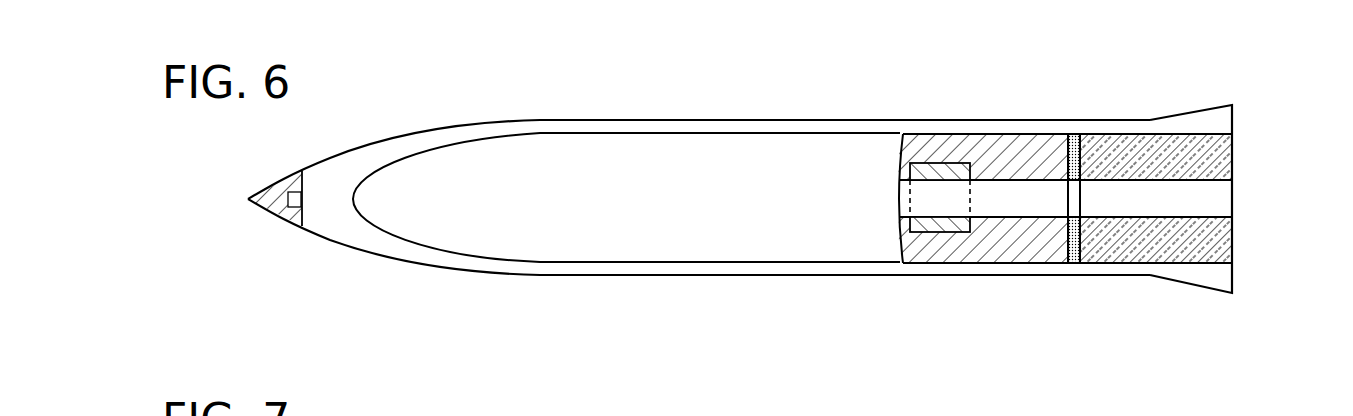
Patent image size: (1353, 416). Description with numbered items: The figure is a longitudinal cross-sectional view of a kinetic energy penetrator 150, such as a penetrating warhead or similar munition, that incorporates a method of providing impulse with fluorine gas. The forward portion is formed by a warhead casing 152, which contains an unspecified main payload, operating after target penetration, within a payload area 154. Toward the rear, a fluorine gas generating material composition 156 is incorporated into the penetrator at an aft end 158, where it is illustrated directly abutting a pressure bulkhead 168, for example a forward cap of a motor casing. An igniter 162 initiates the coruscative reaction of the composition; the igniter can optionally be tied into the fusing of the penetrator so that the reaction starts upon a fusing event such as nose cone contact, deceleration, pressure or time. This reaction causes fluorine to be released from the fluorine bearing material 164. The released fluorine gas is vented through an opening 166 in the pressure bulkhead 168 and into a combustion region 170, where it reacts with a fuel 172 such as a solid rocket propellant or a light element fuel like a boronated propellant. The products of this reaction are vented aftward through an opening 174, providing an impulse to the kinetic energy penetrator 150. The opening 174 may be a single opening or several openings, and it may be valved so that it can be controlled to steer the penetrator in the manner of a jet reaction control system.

The kinetic energy penetrator 150 is at (831, 77).
The warhead casing 152 is at (440, 125).
The payload area 154 is at (559, 213).
The fluorine gas generating material composition 156 is at (882, 167).
The aft end 158 is at (1003, 152).
The igniter 162 is at (925, 233).
The fluorine bearing material 164 is at (1026, 213).
The opening 166 is at (1076, 199).
The pressure bulkhead 168 is at (1072, 134).
The combustion region 170 is at (1168, 212).
The fuel 172 is at (1143, 243).
The opening 174 is at (1248, 198).